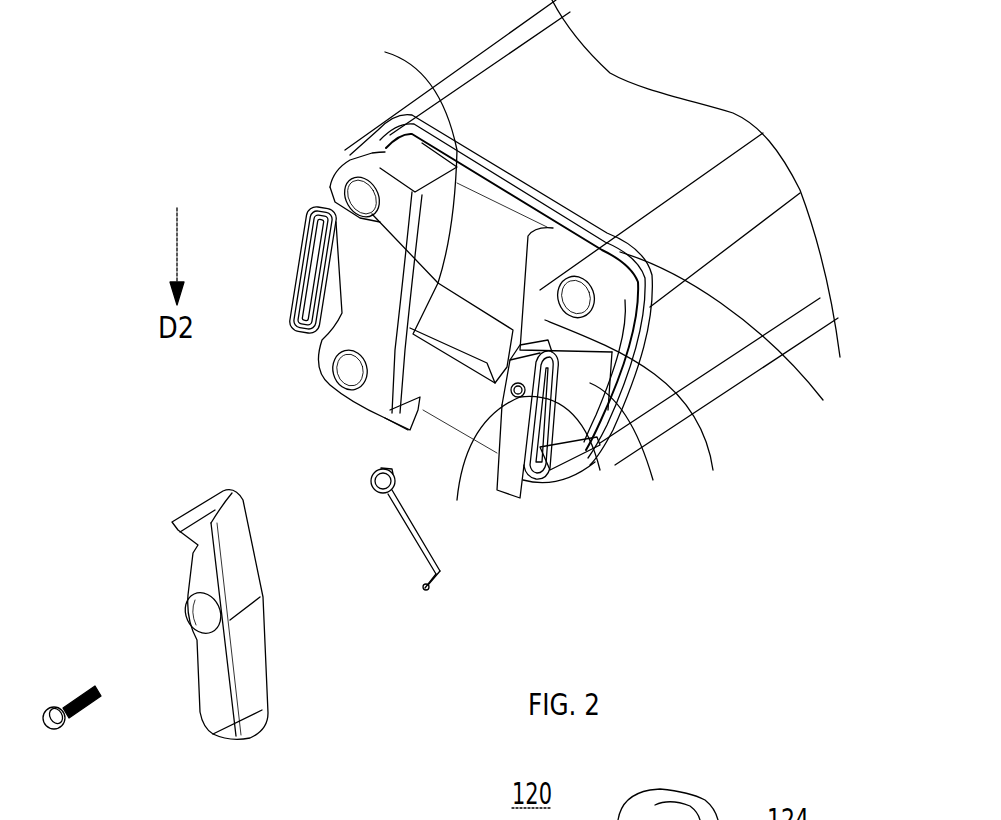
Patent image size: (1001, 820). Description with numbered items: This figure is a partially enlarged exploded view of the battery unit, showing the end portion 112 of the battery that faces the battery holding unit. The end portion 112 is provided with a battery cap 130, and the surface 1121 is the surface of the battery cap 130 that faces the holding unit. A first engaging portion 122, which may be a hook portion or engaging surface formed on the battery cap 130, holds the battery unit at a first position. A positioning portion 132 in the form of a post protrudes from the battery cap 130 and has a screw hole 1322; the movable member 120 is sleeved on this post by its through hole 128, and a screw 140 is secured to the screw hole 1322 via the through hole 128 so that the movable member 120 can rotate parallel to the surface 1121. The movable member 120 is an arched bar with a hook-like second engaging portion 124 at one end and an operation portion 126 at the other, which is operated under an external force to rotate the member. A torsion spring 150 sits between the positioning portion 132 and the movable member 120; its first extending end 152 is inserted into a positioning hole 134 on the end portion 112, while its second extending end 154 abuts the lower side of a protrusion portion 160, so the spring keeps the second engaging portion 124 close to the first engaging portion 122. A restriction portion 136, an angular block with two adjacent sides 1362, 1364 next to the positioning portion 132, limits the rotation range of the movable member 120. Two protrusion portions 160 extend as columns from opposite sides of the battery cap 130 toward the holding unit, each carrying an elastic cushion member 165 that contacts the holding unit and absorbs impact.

The end portion 112 is at (450, 125).
The surface 1121 is at (787, 363).
The battery cap 130 is at (380, 150).
The side 1364 is at (343, 197).
The first engaging portion 122 is at (450, 337).
The restriction portion 136 is at (687, 370).
The side 1362 is at (590, 393).
The protrusion portion 160 is at (300, 265).
The cushion member 165 is at (292, 300).
The positioning portion 132 is at (536, 478).
The screw hole 1322 is at (497, 417).
The positioning hole 134 is at (578, 480).
The torsion spring 150 is at (415, 541).
The first extending end 152 is at (383, 463).
The second extending end 154 is at (436, 582).
The movable member 120 is at (247, 650).
The second engaging portion 124 is at (190, 517).
The through hole 128 is at (207, 612).
The operation portion 126 is at (257, 717).
The screw 140 is at (85, 718).